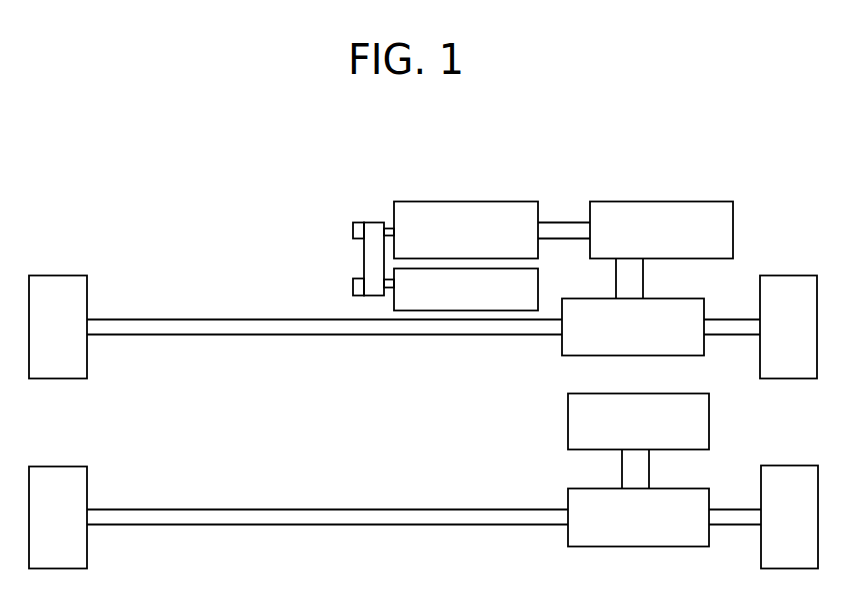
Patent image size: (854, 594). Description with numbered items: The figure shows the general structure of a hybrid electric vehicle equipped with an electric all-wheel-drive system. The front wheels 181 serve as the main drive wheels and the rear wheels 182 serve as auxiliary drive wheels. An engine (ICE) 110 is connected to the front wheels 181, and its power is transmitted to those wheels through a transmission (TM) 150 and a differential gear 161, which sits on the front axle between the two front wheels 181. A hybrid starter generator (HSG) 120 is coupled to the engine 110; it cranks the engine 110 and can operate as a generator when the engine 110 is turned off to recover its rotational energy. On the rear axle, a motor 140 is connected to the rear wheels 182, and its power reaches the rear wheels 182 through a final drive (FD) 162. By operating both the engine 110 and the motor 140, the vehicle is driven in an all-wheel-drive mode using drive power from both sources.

The engine (ICE) 110 is at (475, 200).
The transmission (TM) 150 is at (665, 200).
The hybrid starter generator (HSG) 120 is at (539, 279).
The differential gear 161 is at (560, 343).
The motor 140 is at (567, 416).
The final drive (FD) 162 is at (565, 533).
The front wheels 181 is at (58, 273).
The rear wheels 182 is at (58, 464).